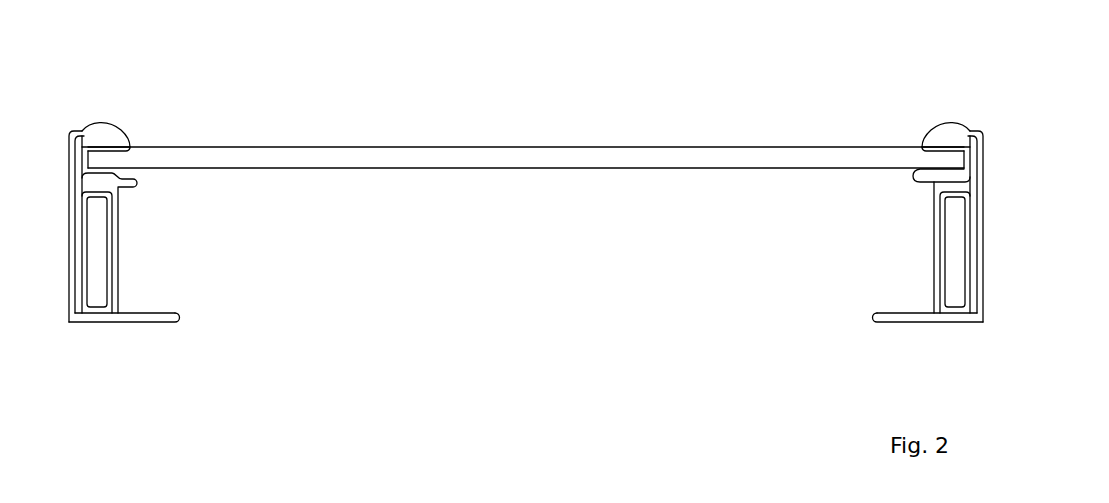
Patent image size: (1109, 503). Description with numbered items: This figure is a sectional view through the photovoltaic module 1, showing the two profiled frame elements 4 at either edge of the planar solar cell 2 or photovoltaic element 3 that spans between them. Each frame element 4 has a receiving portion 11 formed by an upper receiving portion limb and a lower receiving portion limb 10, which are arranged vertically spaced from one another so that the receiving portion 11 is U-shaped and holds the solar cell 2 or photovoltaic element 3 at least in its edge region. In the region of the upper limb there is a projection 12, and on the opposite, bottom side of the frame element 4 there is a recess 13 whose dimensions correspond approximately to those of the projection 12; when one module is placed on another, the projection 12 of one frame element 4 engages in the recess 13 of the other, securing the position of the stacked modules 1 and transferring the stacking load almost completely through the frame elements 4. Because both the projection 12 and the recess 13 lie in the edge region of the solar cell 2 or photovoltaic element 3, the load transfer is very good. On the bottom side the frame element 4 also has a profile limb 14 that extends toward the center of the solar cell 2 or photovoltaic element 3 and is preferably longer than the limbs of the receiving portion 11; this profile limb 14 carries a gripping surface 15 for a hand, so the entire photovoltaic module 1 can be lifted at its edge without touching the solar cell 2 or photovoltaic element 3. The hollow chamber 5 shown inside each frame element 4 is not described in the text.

The photovoltaic module 1 is at (668, 109).
The planar solar cell 2 is at (376, 160).
The photovoltaic element 3 is at (107, 139).
The frame element 4 is at (912, 121).
The hollow chamber 5 is at (93, 262).
The lower receiving portion limb 10 is at (128, 185).
The receiving portion 11 is at (146, 138).
The projection 12 is at (98, 125).
The recess 13 is at (100, 322).
The profile limb 14 is at (148, 316).
The gripping surface 15 is at (140, 323).